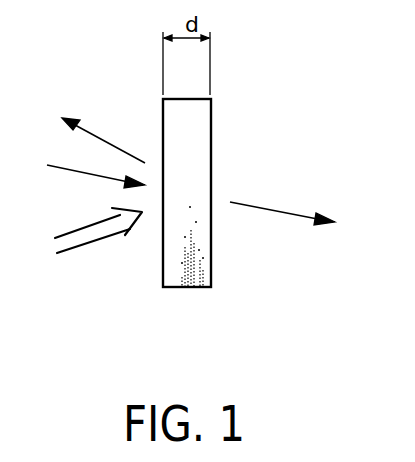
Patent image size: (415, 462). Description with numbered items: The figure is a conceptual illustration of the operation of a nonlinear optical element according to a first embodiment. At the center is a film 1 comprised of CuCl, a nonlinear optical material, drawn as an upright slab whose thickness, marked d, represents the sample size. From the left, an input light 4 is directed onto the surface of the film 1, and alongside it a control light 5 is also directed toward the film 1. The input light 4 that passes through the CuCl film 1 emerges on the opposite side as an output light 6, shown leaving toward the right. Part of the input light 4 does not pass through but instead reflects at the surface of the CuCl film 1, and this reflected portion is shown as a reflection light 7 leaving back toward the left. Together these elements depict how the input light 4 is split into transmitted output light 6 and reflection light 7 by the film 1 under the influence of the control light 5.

The CuCl film 1 is at (183, 289).
The input light 4 is at (66, 168).
The control light 5 is at (95, 241).
The output light 6 is at (288, 213).
The reflection light 7 is at (95, 131).